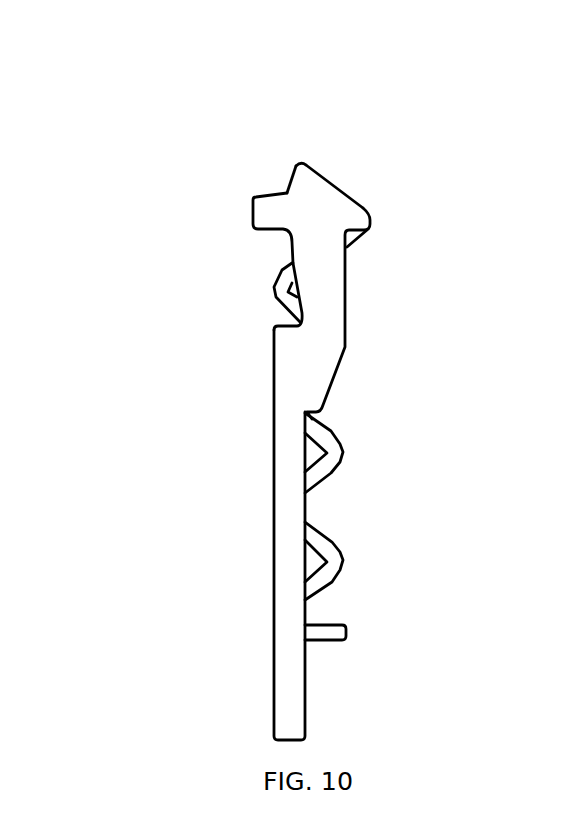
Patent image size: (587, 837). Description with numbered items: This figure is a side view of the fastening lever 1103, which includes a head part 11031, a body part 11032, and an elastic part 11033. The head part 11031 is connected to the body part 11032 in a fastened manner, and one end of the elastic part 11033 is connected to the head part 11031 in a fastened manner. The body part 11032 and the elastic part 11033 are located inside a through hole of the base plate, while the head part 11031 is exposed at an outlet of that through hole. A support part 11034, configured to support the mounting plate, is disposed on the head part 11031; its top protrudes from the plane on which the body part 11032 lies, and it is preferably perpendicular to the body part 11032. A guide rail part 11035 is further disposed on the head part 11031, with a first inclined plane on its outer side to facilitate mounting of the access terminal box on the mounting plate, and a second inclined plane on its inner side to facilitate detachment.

The fastening lever 1103 is at (350, 32).
The head part 11031 is at (327, 248).
The body part 11032 is at (293, 560).
The elastic part 11033 is at (340, 552).
The support part 11034 is at (248, 215).
The guide rail part 11035 is at (298, 160).